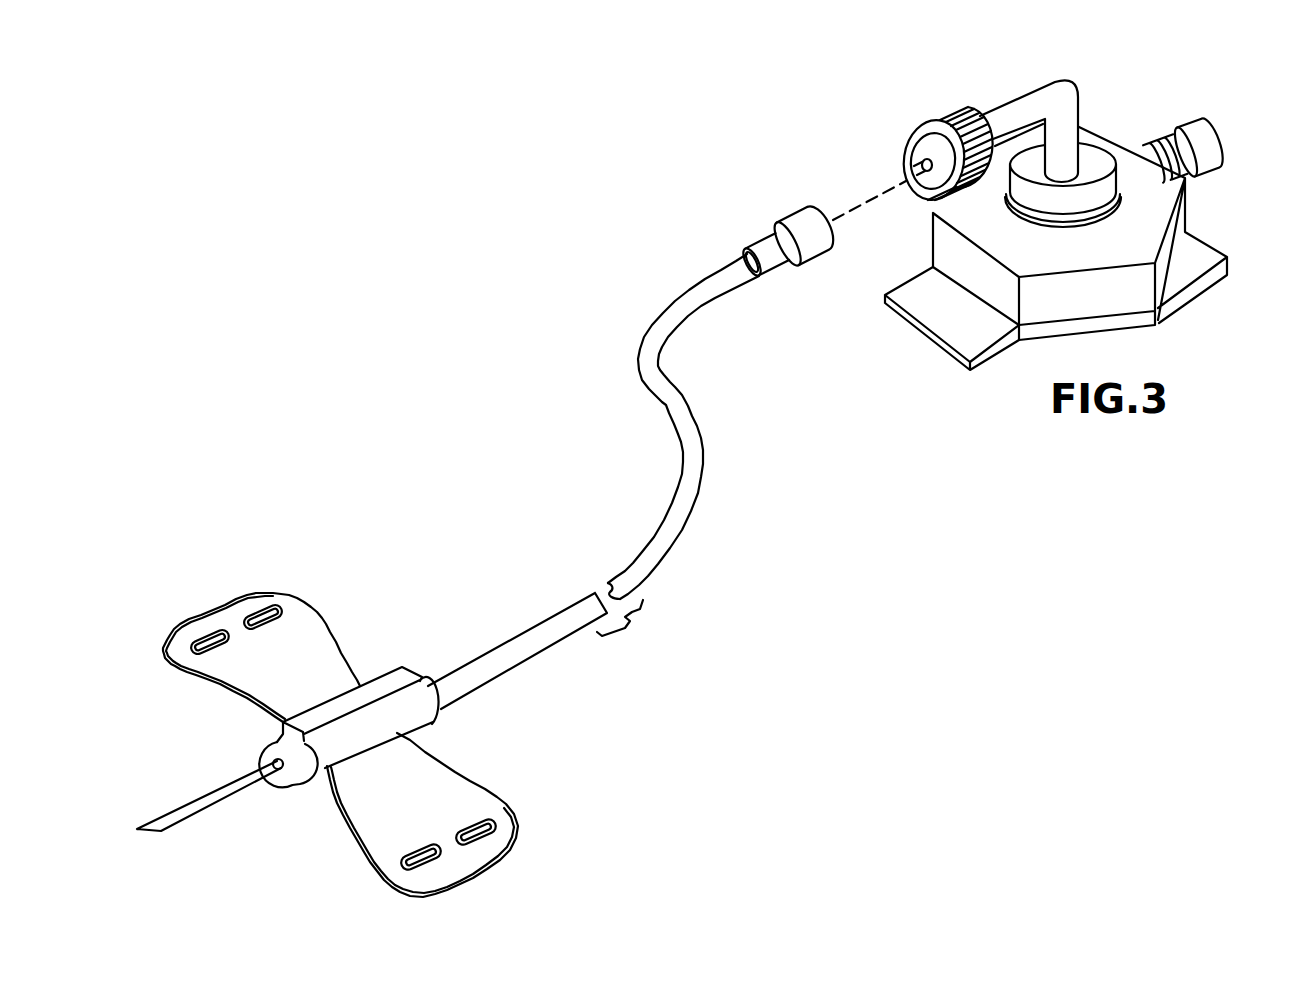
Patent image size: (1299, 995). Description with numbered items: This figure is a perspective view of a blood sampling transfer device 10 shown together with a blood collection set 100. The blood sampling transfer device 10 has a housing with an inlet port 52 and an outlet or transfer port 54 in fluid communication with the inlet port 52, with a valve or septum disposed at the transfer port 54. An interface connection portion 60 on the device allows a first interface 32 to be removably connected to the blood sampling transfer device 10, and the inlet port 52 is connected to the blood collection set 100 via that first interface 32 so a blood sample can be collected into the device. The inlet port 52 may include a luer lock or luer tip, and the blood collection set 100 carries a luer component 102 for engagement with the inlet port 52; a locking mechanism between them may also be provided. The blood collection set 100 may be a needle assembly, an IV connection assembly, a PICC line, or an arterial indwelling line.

The blood sampling transfer device 10 is at (1084, 251).
The first interface 32 is at (934, 119).
The inlet port 52 is at (1093, 130).
The transfer port 54 is at (1213, 170).
The interface connection portion 60 is at (1100, 167).
The blood collection set 100 is at (379, 572).
The luer component 102 is at (782, 210).